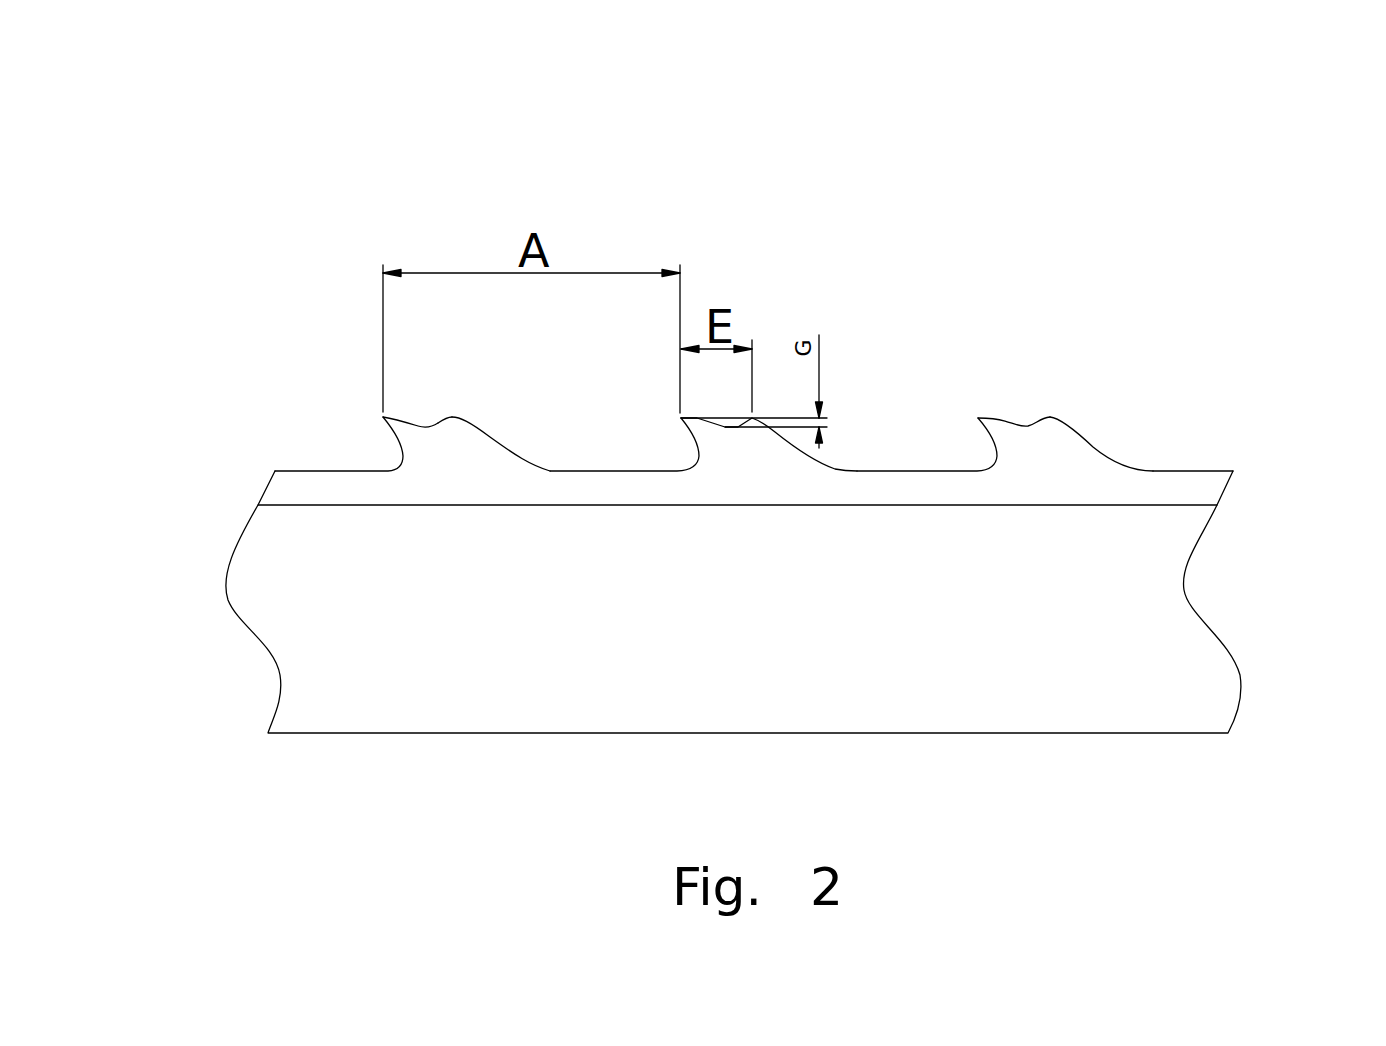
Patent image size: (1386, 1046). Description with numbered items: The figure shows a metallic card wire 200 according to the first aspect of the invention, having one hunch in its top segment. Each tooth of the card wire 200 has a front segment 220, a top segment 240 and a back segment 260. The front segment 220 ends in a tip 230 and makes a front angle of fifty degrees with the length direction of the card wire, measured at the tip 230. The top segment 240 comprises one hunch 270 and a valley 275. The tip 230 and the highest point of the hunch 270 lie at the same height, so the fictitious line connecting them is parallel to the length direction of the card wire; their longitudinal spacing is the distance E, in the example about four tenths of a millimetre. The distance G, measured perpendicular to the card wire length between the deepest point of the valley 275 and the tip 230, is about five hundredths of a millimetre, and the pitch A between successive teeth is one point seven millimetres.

The metallic card wire 200 is at (1217, 172).
The front segment 220 is at (365, 438).
The tip 230 is at (382, 418).
The top segment 240 is at (1023, 415).
The back segment 260 is at (1108, 430).
The hunch 270 is at (452, 420).
The valley 275 is at (430, 427).